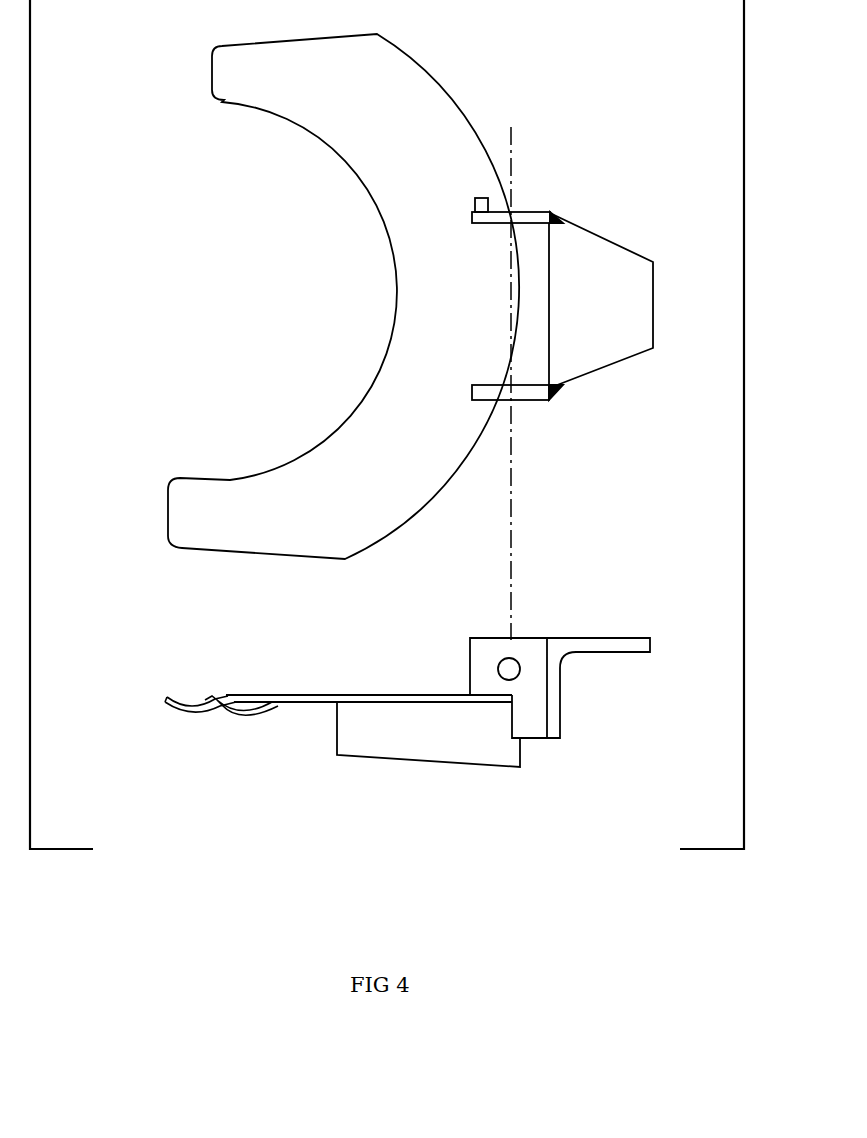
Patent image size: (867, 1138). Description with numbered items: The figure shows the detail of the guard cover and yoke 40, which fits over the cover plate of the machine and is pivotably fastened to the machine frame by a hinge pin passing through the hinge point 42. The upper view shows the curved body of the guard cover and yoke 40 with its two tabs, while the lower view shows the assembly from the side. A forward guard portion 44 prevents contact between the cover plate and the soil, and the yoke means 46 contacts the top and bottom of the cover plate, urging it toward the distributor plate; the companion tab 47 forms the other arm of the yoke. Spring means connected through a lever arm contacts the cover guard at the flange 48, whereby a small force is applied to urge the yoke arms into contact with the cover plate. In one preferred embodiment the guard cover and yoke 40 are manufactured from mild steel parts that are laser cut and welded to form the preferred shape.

The guard cover and yoke 40 is at (430, 295).
The hinge point 42 is at (508, 662).
The forward guard portion 44 is at (488, 748).
The yoke means 46 is at (245, 82).
The lower tab 47 is at (185, 515).
The flange 48 is at (608, 662).